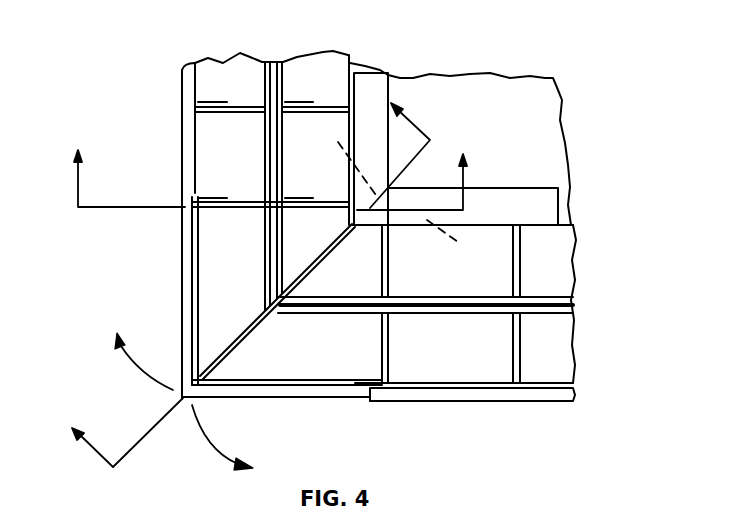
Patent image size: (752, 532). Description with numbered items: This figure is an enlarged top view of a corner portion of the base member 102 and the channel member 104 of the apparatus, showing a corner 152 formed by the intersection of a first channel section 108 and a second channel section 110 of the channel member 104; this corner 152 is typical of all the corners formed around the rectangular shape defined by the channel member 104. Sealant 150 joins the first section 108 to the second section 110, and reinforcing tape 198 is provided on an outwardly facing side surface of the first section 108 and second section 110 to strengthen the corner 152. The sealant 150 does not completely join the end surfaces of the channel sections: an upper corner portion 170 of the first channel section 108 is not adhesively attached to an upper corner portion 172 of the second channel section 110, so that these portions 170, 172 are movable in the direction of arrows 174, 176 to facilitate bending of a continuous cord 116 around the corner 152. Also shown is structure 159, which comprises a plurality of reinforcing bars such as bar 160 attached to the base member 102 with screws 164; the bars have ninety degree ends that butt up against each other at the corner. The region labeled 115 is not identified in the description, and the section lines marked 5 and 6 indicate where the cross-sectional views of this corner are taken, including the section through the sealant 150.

The base member 102 is at (541, 403).
The channel member 104 is at (190, 122).
The first channel section 108 is at (348, 55).
The second channel section 110 is at (578, 224).
The upper wall panel 115 is at (538, 111).
The cord 116 is at (522, 187).
The sealant 150 is at (330, 247).
The corner 152 is at (160, 274).
The structure 159 is at (431, 170).
The reinforcing bar 160 is at (395, 88).
The screws 164 is at (398, 192).
The upper corner portion of first channel section 170 is at (225, 348).
The upper corner portion of second channel section 172 is at (248, 337).
The arrow 174 is at (130, 368).
The arrow 176 is at (207, 448).
The reinforcing tape 198 is at (370, 402).
The section line 5- 5 is at (271, 180).
The section line 6- 6 is at (239, 279).